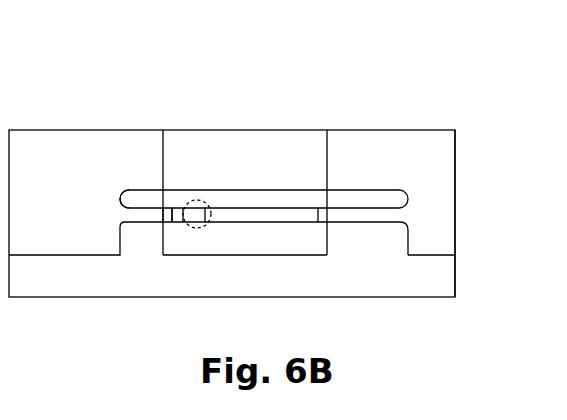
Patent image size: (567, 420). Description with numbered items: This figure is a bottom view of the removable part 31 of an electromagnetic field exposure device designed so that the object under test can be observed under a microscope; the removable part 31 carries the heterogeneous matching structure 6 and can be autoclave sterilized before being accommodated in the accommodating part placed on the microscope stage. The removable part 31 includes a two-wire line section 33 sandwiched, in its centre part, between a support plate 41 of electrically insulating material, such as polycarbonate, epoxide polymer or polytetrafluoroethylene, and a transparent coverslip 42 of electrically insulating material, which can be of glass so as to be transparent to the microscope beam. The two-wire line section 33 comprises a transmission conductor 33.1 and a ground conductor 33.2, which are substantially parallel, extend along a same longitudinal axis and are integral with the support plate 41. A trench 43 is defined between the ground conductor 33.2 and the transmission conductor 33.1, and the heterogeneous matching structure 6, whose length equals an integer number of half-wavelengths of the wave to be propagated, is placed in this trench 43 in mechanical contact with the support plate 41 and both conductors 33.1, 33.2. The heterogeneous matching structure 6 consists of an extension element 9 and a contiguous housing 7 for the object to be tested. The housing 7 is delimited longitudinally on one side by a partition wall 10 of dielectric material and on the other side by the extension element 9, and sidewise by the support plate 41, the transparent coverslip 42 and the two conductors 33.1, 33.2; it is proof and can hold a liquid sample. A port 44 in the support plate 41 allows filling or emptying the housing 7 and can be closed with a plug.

The heterogeneous matching structure 6 is at (248, 256).
The housing 7 is at (200, 208).
The extension element 9 is at (263, 207).
The partition wall 10 is at (183, 210).
The removable part 31 is at (352, 116).
The two-wire line section 33 is at (391, 170).
The transmission conductor 33.1 is at (137, 200).
The ground conductor 33.2 is at (142, 277).
The support plate 41 is at (428, 155).
The transparent coverslip 42 is at (303, 141).
The trench 43 is at (162, 207).
The port 44 is at (203, 228).